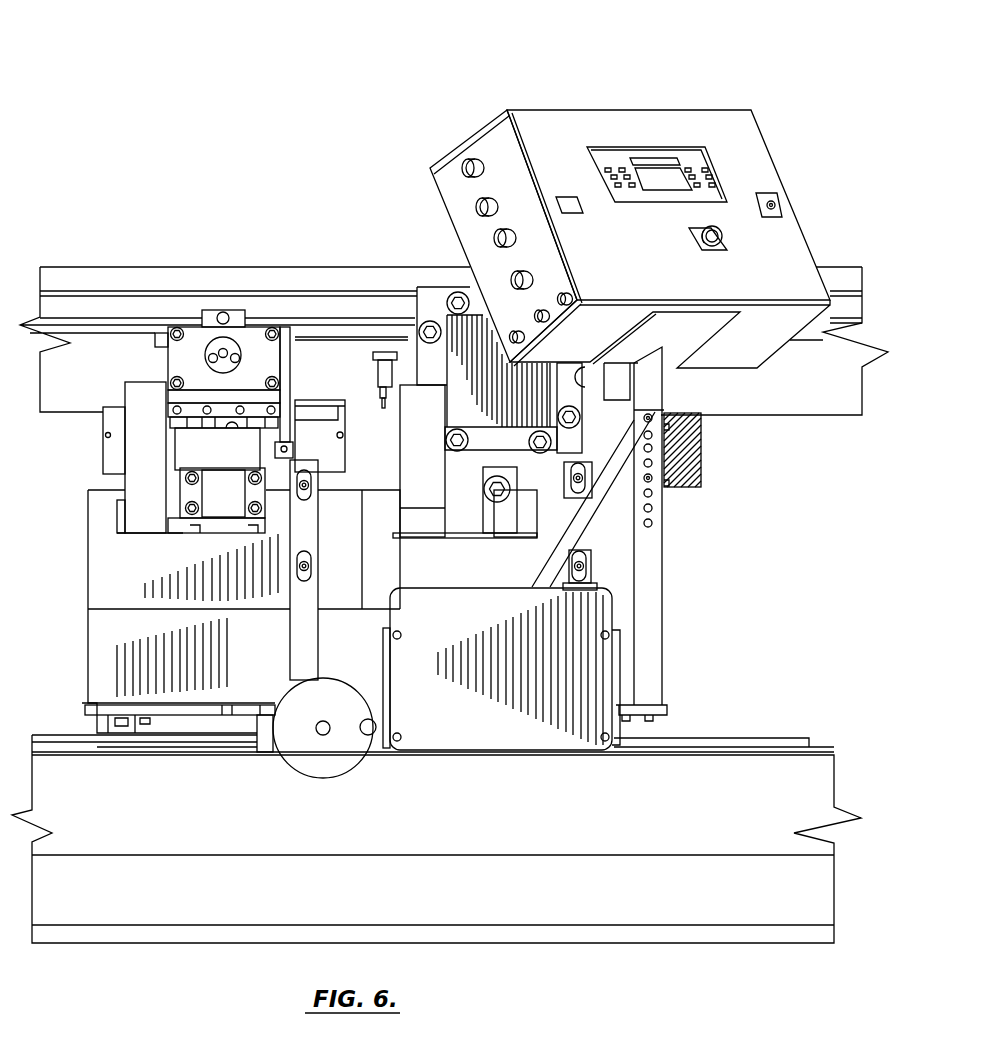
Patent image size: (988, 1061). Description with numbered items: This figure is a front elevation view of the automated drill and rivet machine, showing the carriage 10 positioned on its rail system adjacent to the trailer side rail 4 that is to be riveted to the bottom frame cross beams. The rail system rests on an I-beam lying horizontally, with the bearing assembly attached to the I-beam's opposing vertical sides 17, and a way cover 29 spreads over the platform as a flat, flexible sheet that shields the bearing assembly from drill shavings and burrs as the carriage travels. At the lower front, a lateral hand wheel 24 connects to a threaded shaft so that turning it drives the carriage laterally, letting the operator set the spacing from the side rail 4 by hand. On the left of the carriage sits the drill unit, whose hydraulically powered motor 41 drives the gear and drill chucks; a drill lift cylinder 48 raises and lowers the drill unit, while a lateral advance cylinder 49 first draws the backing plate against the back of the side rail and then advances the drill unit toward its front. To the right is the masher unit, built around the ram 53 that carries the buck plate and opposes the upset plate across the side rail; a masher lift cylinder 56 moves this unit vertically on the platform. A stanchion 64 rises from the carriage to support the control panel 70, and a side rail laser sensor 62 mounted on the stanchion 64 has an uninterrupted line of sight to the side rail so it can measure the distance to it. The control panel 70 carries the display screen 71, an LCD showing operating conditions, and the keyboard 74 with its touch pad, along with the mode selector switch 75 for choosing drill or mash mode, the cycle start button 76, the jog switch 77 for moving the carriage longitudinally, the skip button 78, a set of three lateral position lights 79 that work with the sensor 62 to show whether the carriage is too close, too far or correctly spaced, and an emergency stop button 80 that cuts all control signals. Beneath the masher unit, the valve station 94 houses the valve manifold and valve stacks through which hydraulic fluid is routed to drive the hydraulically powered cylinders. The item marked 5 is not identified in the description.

The trailer side rail 4 is at (85, 382).
The upper rail 5 is at (100, 285).
The carriage 10 is at (77, 587).
The opposing vertical sides of I-beam 17 is at (594, 813).
The lateral hand wheel 24 is at (300, 760).
The way cover 29 is at (819, 750).
The motor 41 is at (215, 350).
The drill lift cylinder 48 is at (143, 433).
The lateral advance cylinder 49 is at (218, 502).
The ram 53 is at (470, 360).
The masher lift cylinder 56 is at (417, 448).
The side rail laser sensor 62 is at (701, 463).
The stanchion 64 is at (664, 583).
The control panel 70 is at (599, 204).
The display screen 71 is at (657, 180).
The keyboard 74 is at (691, 167).
The mode selector switch 75 is at (493, 143).
The cycle start button 76 is at (469, 158).
The jog switch 77 is at (489, 197).
The skip button 78 is at (506, 229).
The lateral position lights 79 is at (541, 310).
The emergency stop button 80 is at (724, 227).
The valve station 94 is at (558, 665).